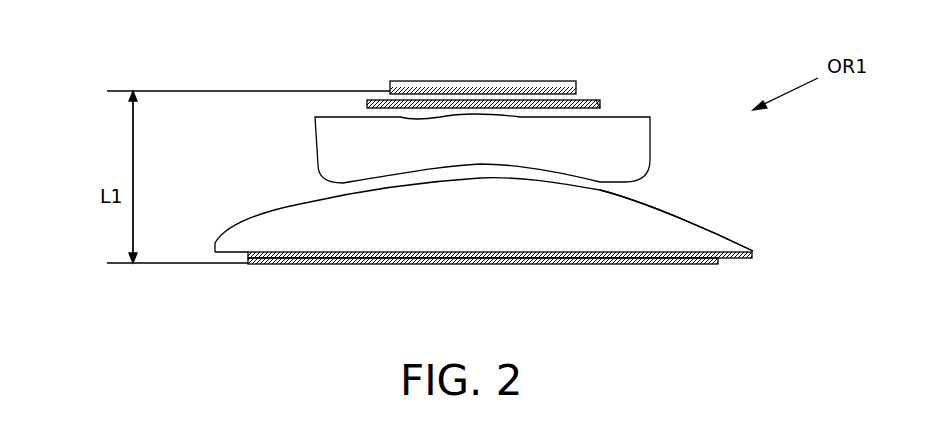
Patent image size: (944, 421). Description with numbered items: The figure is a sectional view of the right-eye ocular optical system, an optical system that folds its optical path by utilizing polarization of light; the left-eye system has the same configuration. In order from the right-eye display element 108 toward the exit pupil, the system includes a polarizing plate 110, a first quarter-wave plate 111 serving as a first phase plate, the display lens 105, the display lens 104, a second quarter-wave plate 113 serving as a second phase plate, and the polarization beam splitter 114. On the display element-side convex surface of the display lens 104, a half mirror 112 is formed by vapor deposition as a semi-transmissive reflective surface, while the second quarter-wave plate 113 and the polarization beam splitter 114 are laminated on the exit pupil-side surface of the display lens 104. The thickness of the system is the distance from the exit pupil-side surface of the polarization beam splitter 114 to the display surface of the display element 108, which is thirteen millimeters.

The display lens 104 is at (723, 242).
The display lens 105 is at (627, 135).
The right-eye display element 108 is at (573, 83).
The polarizing plate 110 is at (598, 102).
The first λ/4 plate 111 is at (600, 105).
The half mirror 112 is at (262, 218).
The second λ/4 plate 113 is at (625, 258).
The polarization beam splitter 114 is at (683, 265).